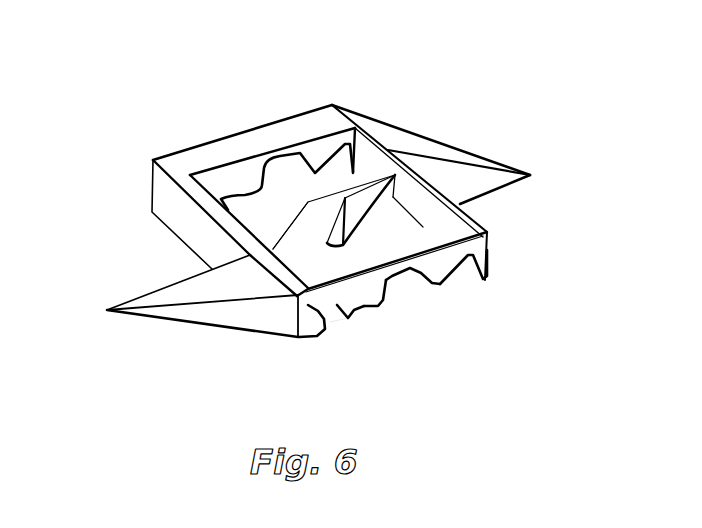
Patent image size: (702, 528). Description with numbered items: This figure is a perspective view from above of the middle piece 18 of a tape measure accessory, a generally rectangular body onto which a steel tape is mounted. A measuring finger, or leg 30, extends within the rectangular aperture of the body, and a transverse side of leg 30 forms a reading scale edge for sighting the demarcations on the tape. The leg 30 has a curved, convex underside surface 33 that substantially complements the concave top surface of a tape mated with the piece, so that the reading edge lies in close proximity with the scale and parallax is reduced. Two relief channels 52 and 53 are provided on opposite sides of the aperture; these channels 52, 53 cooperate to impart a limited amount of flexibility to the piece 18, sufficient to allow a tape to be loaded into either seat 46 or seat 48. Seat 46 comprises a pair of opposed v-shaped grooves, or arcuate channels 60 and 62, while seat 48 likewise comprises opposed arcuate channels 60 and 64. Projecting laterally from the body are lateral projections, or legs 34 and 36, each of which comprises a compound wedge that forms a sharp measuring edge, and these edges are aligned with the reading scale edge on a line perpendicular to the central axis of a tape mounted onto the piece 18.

The middle piece 18 is at (407, 98).
The leg 30 is at (320, 218).
The underside surface 33 is at (367, 213).
The lateral projection 34 is at (438, 141).
The leg 36 is at (184, 322).
The seat 46 is at (356, 322).
The seat 48 is at (339, 338).
The relief channel 52 is at (405, 270).
The relief channel 53 is at (264, 178).
The arcuate channel 60 is at (453, 280).
The arcuate channel 62 is at (368, 313).
The arcuate channel 64 is at (328, 322).